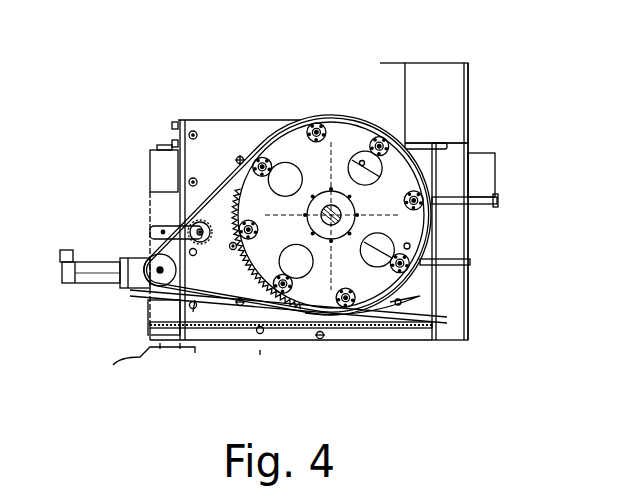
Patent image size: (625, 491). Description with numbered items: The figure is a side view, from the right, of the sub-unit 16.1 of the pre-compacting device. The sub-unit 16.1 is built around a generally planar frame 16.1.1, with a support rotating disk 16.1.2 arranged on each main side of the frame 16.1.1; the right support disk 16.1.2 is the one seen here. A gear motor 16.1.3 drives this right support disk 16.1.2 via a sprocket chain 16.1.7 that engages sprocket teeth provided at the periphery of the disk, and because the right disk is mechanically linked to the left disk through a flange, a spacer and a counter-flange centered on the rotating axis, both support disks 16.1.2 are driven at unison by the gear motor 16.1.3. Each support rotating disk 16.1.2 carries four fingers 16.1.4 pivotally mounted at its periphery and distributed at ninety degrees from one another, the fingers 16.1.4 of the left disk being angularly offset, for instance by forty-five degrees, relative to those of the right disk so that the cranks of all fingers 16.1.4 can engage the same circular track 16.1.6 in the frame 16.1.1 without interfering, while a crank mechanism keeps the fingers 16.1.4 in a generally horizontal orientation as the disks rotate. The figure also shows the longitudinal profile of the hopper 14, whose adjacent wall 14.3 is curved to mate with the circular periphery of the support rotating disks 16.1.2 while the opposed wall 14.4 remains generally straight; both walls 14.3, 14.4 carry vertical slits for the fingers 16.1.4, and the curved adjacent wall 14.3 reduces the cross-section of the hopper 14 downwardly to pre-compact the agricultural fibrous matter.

The sub-unit 16.1 is at (136, 93).
The frame 16.1.1 is at (218, 135).
The support rotating disk 16.1.2 is at (287, 140).
The gear motor 16.1.3 is at (95, 275).
The fingers 16.1.4 is at (445, 146).
The circular track 16.1.6 is at (305, 315).
The sprocket chain 16.1.7 is at (218, 303).
The hopper 14 is at (458, 46).
The adjacent wall 14.3 is at (404, 90).
The opposed wall 14.4 is at (469, 80).